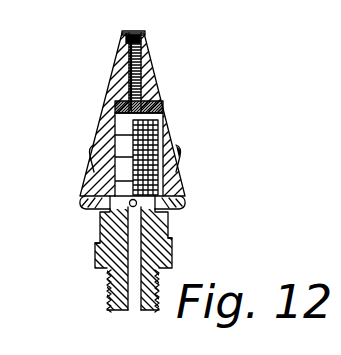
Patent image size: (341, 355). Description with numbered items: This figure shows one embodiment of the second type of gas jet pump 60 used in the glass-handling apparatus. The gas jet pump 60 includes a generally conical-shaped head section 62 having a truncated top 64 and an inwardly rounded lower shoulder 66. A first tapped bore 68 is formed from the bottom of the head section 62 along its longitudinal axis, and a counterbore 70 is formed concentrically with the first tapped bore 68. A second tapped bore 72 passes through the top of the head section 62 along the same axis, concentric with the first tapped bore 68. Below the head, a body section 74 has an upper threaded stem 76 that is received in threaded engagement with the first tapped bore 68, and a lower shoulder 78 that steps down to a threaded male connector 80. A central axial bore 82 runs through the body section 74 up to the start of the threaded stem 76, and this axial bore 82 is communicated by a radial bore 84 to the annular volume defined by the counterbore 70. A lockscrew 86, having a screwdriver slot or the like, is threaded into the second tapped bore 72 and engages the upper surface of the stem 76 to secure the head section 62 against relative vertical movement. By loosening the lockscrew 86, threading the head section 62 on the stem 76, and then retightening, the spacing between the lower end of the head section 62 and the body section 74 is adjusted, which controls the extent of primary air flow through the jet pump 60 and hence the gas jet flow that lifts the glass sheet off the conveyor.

The gas jet pump 60 is at (160, 80).
The head section 62 is at (150, 54).
The truncated top 64 is at (126, 32).
The inwardly rounded lower shoulder 66 is at (95, 204).
The first tapped bore 68 is at (161, 112).
The counterbore 70 is at (103, 200).
The second tapped bore 72 is at (138, 32).
The body section 74 is at (110, 231).
The upper threaded stem 76 is at (122, 133).
The lower shoulder 78 is at (94, 267).
The threaded male connector 80 is at (105, 286).
The central axial bore 82 is at (130, 311).
The radial bore 84 is at (176, 193).
The lockscrew 86 is at (128, 73).